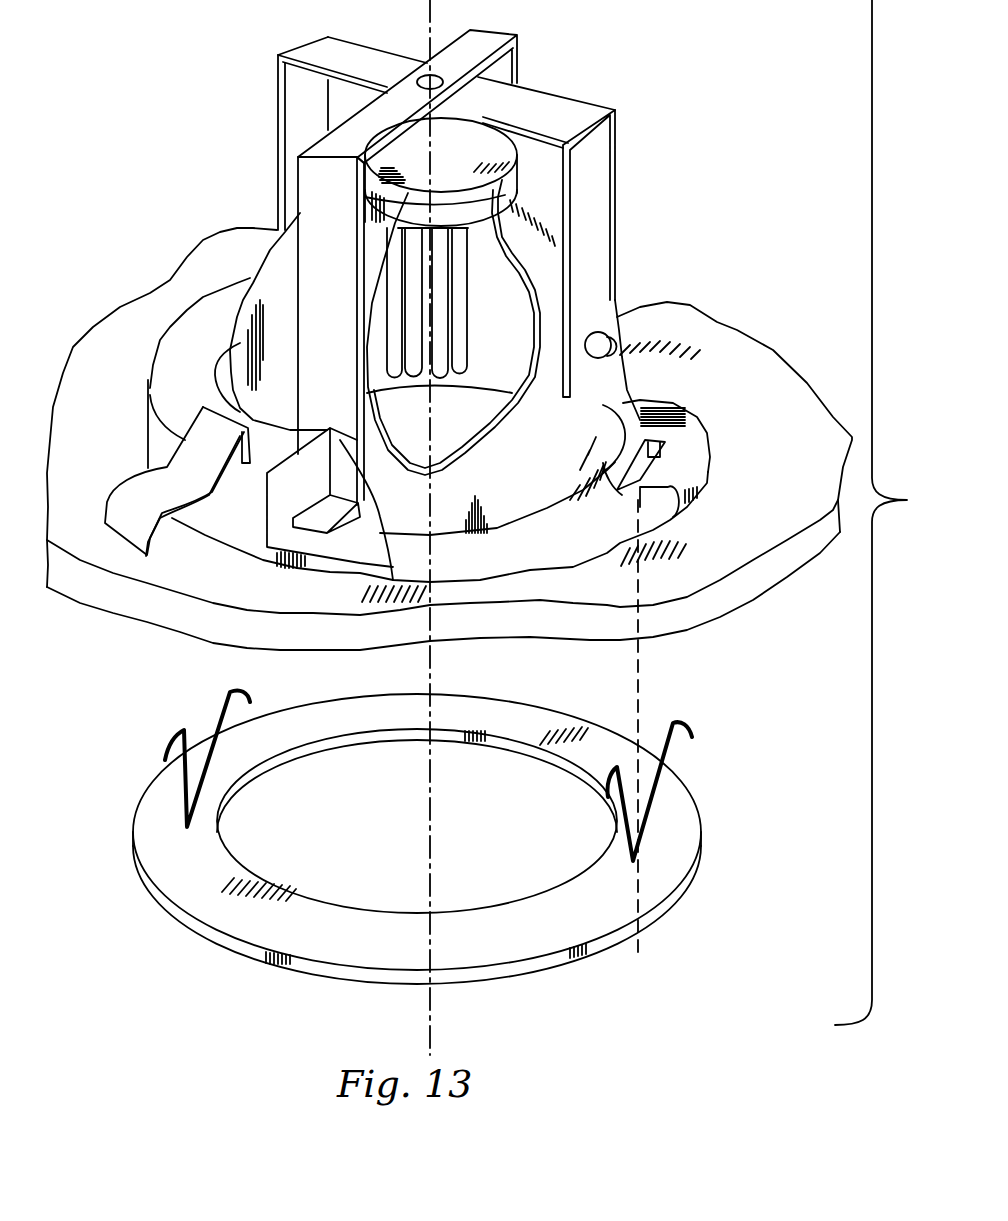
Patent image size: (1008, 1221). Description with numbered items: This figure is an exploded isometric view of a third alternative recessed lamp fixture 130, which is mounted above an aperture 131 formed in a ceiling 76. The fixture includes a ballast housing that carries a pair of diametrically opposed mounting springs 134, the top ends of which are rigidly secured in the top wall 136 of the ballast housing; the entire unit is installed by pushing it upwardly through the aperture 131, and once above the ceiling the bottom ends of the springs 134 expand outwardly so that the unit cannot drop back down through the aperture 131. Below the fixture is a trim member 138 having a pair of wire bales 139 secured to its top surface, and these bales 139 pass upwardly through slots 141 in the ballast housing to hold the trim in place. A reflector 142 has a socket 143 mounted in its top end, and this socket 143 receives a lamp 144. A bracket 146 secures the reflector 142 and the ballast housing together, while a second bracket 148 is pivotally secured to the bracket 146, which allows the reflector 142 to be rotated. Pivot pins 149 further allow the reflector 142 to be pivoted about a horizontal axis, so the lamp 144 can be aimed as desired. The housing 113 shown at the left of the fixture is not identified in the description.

The ceiling 76 is at (90, 400).
The cylindrical housing 113 is at (177, 322).
The recessed lamp fixture 130 is at (891, 283).
The aperture 131 is at (575, 562).
The mounting springs 134 is at (128, 497).
The top wall 136 is at (220, 310).
The trim member 138 is at (180, 863).
The wire bales 139 is at (228, 698).
The slots 141 is at (678, 418).
The reflector 142 is at (583, 418).
The socket 143 is at (442, 207).
The lamp 144 is at (435, 317).
The bracket 146 is at (352, 272).
The bracket 148 is at (522, 108).
The pivot pins 149 is at (562, 397).